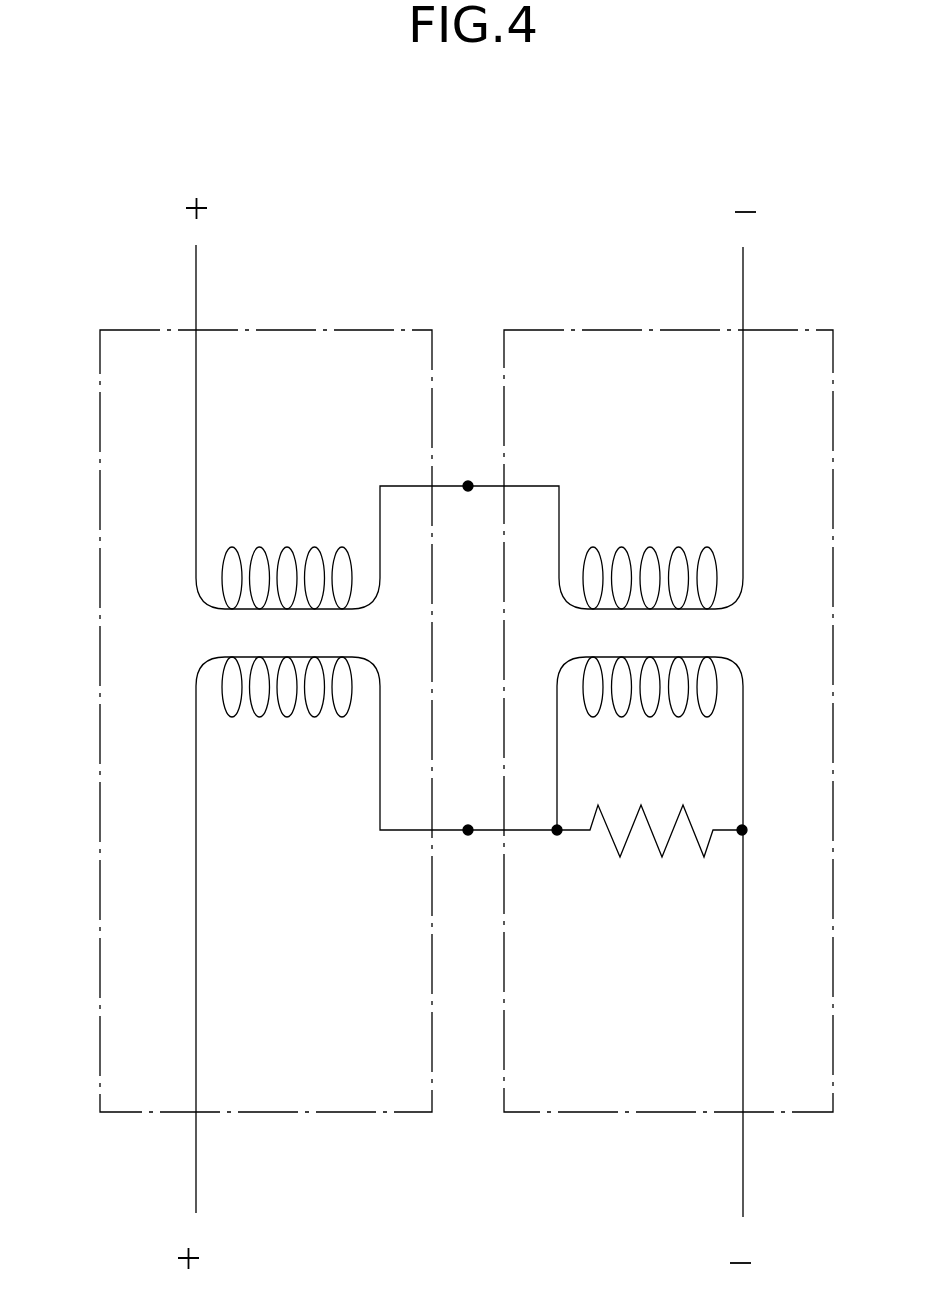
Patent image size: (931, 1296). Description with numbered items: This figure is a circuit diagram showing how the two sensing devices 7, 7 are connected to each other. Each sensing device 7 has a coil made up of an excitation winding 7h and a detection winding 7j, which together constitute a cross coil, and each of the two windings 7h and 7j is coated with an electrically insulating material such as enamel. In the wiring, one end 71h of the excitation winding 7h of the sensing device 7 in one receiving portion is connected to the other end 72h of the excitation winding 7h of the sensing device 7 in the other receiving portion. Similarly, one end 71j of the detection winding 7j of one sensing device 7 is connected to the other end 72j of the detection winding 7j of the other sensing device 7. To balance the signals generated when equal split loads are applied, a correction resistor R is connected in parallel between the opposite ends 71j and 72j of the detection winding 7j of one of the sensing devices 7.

The sensing device 7 is at (100, 580).
The excitation winding 7h is at (306, 533).
The detection winding 7j is at (299, 717).
The one end of the excitation winding 71h is at (196, 272).
The other end of the excitation winding 72h is at (743, 272).
The one end of the detection winding 71j is at (190, 1158).
The other end of the detection winding 72j is at (741, 1157).
The correction resistor R is at (644, 858).